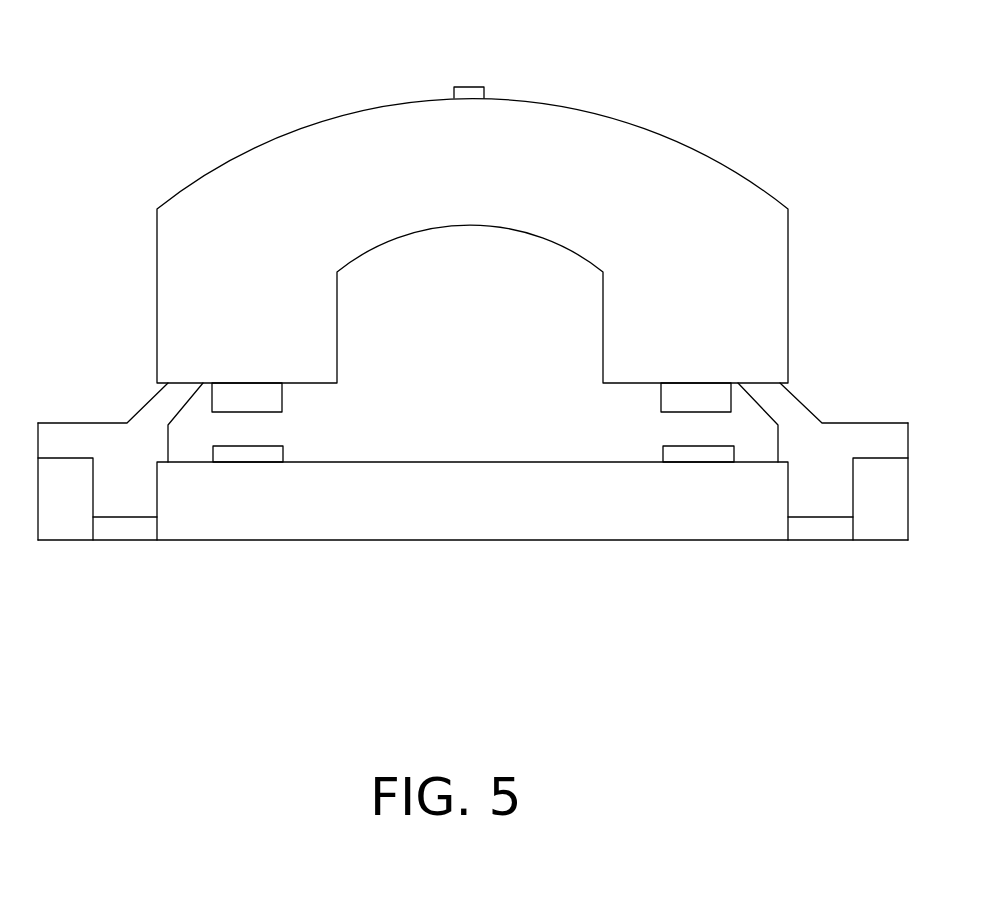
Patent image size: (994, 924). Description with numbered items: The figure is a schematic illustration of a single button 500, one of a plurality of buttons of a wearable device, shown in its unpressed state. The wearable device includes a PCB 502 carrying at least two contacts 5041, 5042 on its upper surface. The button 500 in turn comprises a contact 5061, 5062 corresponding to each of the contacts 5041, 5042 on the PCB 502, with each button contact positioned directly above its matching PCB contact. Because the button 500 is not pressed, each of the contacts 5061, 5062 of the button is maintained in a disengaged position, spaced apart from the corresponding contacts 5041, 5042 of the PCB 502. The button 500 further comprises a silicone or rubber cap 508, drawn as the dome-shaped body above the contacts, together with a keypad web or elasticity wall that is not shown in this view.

The button 500 is at (765, 98).
The PCB 502 is at (495, 520).
The contact 5041 is at (250, 452).
The contact 5042 is at (677, 453).
The contact 5061 is at (238, 398).
The contact 5062 is at (682, 397).
The silicone cap 508 is at (422, 125).